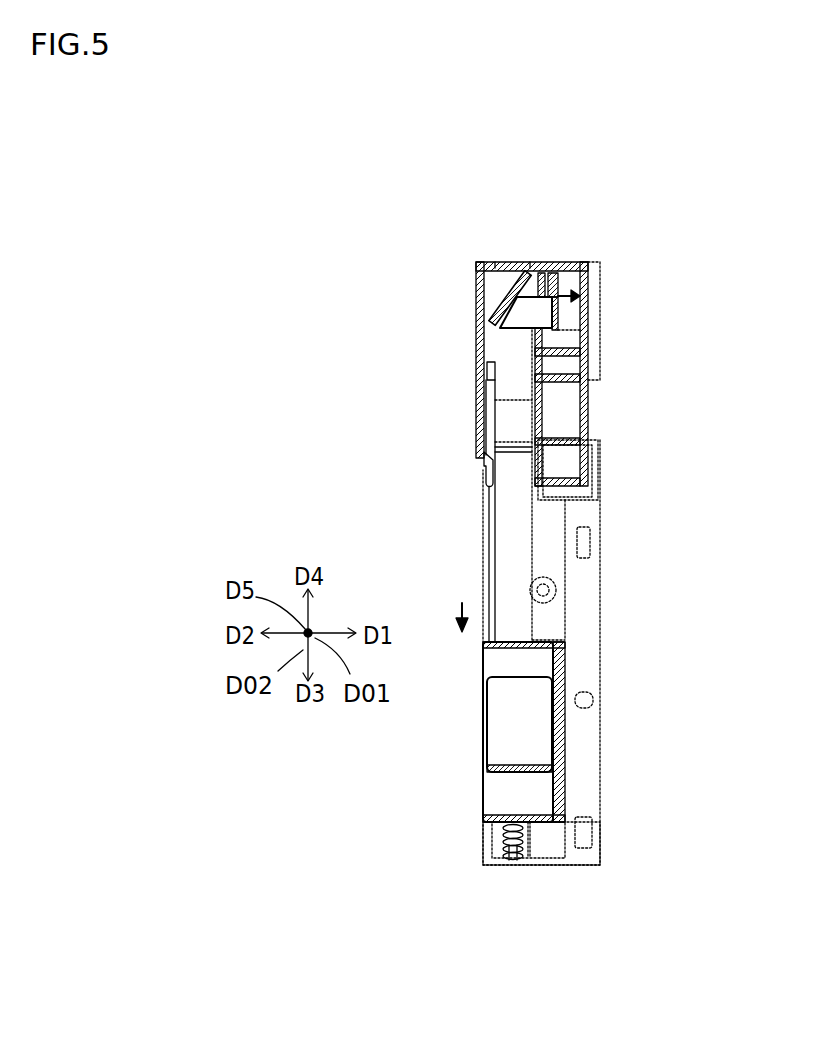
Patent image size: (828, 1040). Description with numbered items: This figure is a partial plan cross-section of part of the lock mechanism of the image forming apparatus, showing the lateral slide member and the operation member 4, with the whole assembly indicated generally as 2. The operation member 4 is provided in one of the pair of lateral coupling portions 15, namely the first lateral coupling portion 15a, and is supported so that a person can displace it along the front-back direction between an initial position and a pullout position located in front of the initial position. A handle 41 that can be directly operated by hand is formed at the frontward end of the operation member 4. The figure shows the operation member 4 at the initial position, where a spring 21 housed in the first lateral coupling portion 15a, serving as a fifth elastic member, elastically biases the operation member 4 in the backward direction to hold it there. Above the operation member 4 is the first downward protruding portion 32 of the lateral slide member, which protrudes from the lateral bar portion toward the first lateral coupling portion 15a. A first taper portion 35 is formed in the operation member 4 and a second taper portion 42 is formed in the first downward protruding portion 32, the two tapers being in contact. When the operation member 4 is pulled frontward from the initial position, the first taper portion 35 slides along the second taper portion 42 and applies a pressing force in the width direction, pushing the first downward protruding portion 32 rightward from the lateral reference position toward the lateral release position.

The image forming apparatus 2 is at (322, 256).
The operation member 4 is at (481, 530).
The lateral coupling portions 15 is at (595, 374).
The first lateral coupling portion 15a is at (590, 396).
The spring 21 is at (503, 838).
The first downward protruding portion 32 is at (568, 313).
The first taper portion 35 is at (497, 313).
The handle 41 is at (517, 767).
The second taper portion 42 is at (525, 300).